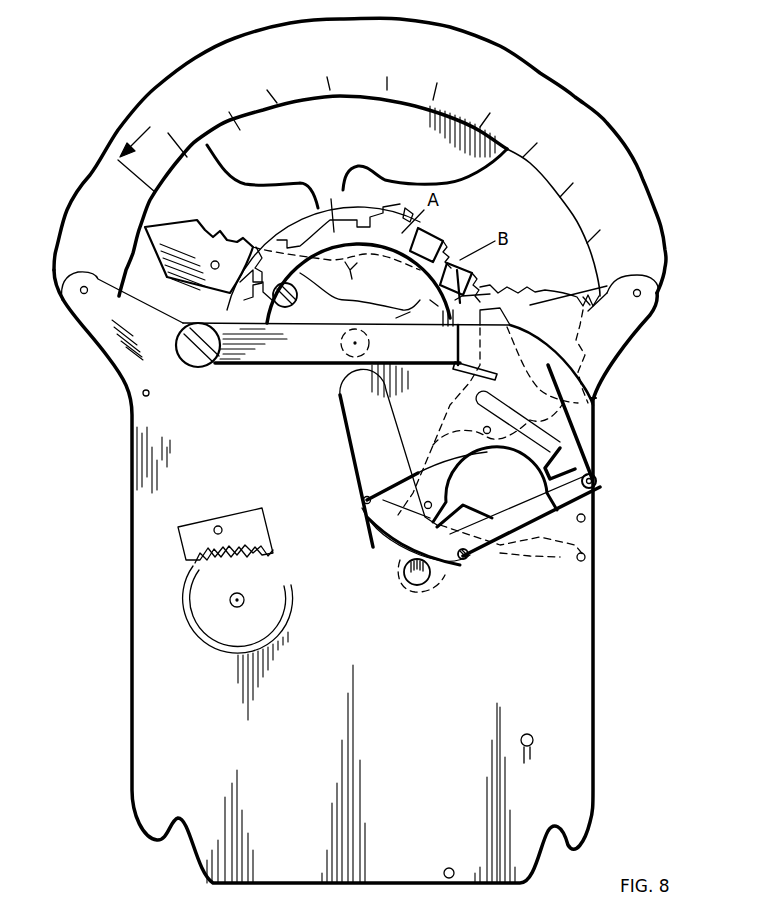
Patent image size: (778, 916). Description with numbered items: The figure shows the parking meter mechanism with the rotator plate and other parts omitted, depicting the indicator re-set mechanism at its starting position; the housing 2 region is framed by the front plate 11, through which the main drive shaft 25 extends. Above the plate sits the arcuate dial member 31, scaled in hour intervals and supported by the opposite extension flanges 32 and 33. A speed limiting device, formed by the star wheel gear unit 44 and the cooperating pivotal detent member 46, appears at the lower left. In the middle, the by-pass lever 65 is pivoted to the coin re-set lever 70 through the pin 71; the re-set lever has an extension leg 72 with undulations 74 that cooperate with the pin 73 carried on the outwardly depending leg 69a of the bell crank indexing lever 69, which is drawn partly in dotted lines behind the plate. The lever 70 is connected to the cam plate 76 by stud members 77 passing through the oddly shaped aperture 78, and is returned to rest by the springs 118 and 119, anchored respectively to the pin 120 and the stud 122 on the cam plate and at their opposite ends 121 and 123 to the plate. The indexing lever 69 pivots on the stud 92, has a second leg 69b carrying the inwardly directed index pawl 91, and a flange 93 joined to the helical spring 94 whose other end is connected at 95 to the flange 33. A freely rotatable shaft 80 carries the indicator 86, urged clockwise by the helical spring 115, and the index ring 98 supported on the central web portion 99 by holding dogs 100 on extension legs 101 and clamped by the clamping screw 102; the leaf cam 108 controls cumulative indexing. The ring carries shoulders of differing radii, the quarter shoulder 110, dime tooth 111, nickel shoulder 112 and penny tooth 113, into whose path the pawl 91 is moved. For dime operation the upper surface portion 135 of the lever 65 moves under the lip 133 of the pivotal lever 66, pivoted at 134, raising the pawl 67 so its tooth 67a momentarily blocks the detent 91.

The timing device housing 2 is at (130, 665).
The front plate 11 is at (583, 740).
The main drive shaft 25 is at (405, 576).
The dial member 31 is at (567, 120).
The extension flange 32 is at (78, 302).
The extension flange 33 is at (613, 333).
The star wheel gear unit 44 is at (232, 635).
The pivotal detent member 46 is at (199, 526).
The by-pass lever 65 is at (573, 457).
The pivotal lever 66 is at (273, 353).
The pawl 67 is at (520, 345).
The tooth 67a is at (539, 291).
The bell crank indexing lever 69 is at (477, 389).
The outwardly depending leg 69a is at (388, 480).
The second leg 69b is at (512, 352).
The coin re-set lever 70 is at (570, 492).
The pin 71 is at (597, 478).
The extension leg 72 is at (397, 512).
The pin 73 is at (363, 502).
The undulations 74 is at (428, 501).
The cam plate 76 is at (447, 575).
The stud members 77 is at (440, 535).
The aperture 78 is at (345, 418).
The shaft 80 is at (341, 345).
The indicator 86 is at (185, 240).
The index pawl 91 is at (500, 308).
The stud 92 is at (484, 427).
The flange 93 is at (594, 405).
The helical spring 94 is at (580, 333).
The spring connection 95 is at (585, 295).
The index ring 98 is at (362, 250).
The central web portion 99 is at (360, 304).
The holding dogs 100 is at (433, 304).
The extension legs 101 is at (403, 317).
The clamping screw 102 is at (297, 302).
The leaf cam 108 is at (367, 213).
The shoulder 110 is at (397, 233).
The tooth 111 is at (430, 230).
The shoulder 112 is at (447, 240).
The tooth 113 is at (440, 257).
The helical spring 115 is at (250, 240).
The spring 118 is at (557, 518).
The spring 119 is at (543, 560).
The pin 120 is at (465, 507).
The spring end 121 is at (587, 518).
The stud 122 is at (468, 560).
The spring end 123 is at (587, 560).
The lip 133 is at (498, 378).
The pivot 134 is at (192, 355).
The upper surface portion 135 is at (524, 403).